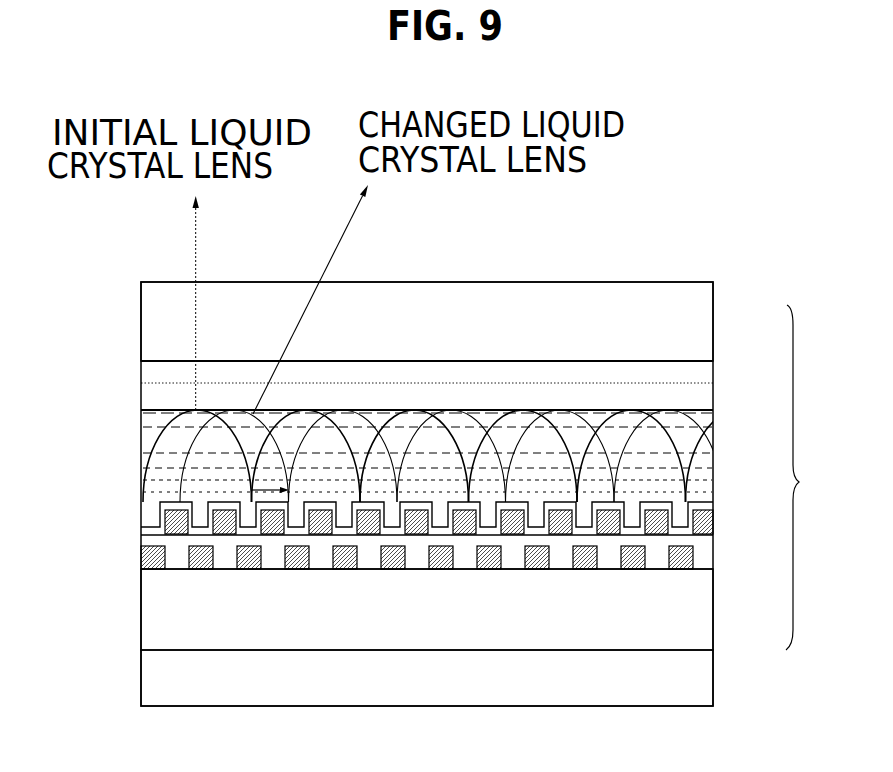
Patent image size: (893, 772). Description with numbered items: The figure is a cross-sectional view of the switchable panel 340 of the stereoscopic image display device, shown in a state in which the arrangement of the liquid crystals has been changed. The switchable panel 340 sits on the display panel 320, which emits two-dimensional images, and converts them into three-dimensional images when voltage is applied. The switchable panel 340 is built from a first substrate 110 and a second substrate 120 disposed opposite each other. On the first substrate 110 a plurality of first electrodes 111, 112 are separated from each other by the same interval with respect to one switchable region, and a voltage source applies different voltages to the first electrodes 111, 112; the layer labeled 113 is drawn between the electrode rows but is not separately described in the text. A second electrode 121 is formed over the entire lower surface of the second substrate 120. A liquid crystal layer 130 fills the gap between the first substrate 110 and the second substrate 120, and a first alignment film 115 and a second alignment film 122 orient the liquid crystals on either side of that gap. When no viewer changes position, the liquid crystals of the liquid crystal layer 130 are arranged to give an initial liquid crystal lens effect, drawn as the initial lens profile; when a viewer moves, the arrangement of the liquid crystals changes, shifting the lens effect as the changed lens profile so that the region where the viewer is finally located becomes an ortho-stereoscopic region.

The second substrate 120 is at (660, 291).
The second electrode 121 is at (713, 368).
The second alignment film 122 is at (713, 397).
The liquid crystal layer 130 is at (150, 430).
The first alignment film 115 is at (713, 503).
The first electrode 112 is at (710, 518).
The first electrode 111 is at (142, 553).
The insulating layer 113 is at (710, 553).
The first substrate 110 is at (710, 620).
The display panel 320 is at (710, 687).
The switchable panel 340 is at (810, 477).